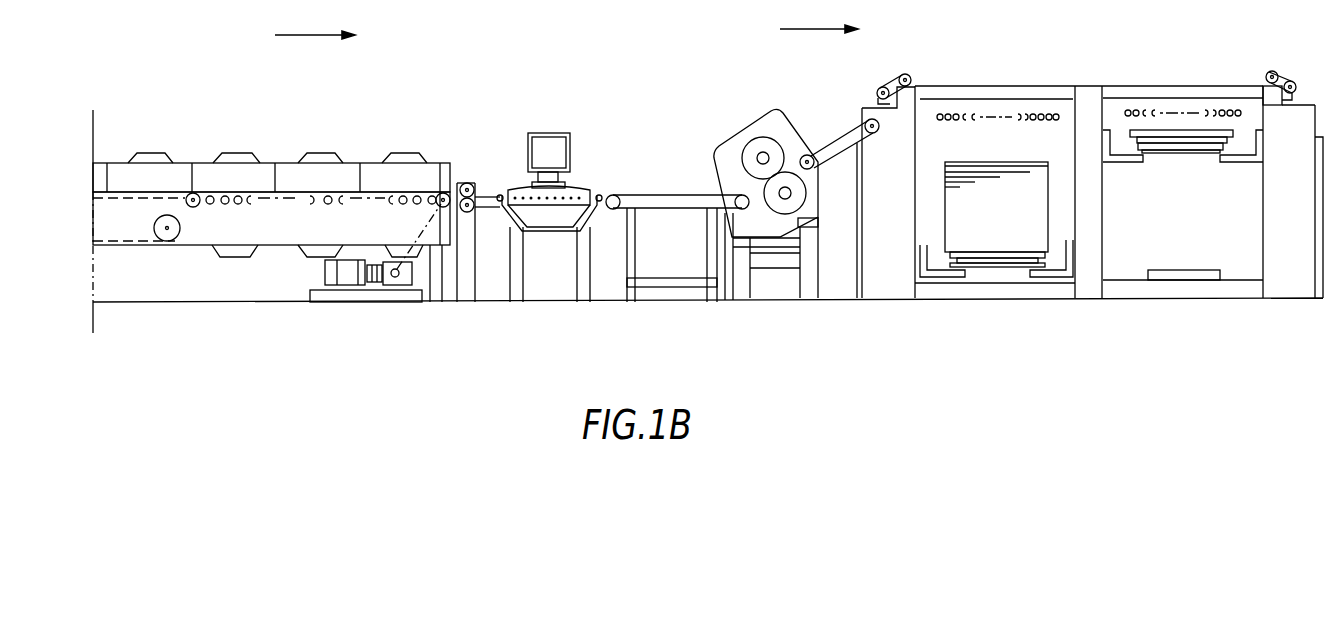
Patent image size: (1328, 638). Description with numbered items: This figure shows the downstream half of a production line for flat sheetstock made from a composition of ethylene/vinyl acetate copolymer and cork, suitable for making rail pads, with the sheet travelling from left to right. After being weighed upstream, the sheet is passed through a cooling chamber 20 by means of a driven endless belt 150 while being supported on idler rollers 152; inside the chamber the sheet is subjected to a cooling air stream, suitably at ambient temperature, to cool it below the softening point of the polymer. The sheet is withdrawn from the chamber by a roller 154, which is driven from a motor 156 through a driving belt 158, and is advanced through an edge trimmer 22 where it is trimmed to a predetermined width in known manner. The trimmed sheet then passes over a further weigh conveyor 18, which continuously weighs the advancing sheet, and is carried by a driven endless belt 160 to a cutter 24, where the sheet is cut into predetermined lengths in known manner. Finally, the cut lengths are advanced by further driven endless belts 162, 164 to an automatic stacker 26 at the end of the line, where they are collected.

The weigh conveyor 18 is at (572, 180).
The cooling chamber 20 is at (287, 180).
The edge trimmer 22 is at (467, 182).
The cutter 24 is at (782, 122).
The stacker 26 is at (993, 86).
The driven endless belt 150 is at (192, 207).
The idler rollers 152 is at (403, 204).
The roller 154 is at (445, 193).
The motor 156 is at (405, 284).
The driving belt 158 is at (412, 258).
The driven endless belt 160 is at (665, 205).
The driven endless belt 162 is at (832, 135).
The driven endless belt 164 is at (886, 86).